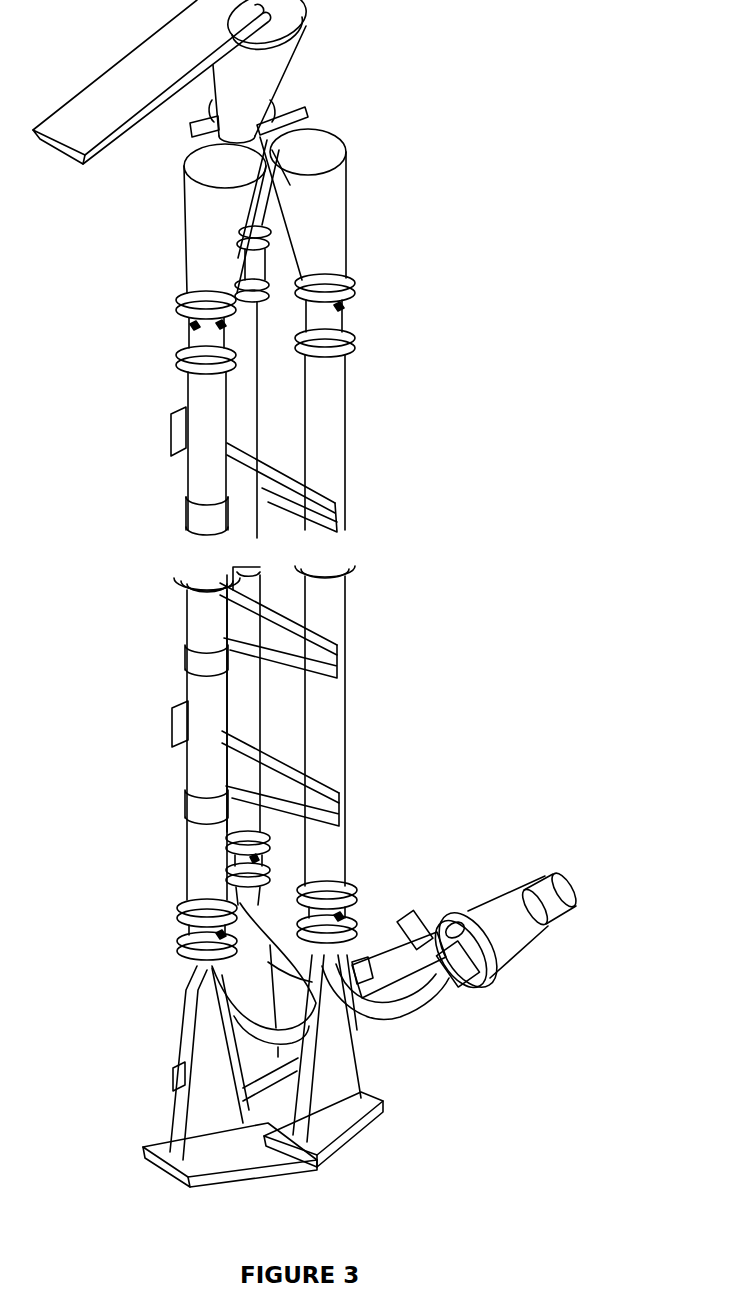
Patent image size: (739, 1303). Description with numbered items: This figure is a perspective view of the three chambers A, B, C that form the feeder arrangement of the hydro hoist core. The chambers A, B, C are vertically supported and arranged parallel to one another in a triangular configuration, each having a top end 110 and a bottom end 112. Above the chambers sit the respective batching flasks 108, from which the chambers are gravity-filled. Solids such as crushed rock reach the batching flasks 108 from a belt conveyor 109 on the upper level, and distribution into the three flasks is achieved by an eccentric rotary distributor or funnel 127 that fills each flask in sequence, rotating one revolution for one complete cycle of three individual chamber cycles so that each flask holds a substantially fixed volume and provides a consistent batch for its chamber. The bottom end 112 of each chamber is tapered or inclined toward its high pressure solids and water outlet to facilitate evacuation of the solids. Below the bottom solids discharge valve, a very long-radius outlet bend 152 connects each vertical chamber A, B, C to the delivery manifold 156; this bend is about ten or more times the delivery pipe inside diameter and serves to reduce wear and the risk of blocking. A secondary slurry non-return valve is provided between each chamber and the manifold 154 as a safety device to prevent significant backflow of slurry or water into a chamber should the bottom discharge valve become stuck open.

The belt conveyor 109 is at (118, 80).
The eccentric rotary distributor or funnel 127 is at (262, 82).
The batching flasks 108 is at (332, 212).
The top end 110 is at (357, 278).
The chamber A is at (208, 455).
The chamber B is at (240, 390).
The chamber C is at (325, 412).
The bottom end 112 is at (357, 884).
The long-radius outlet bend 152 is at (408, 1010).
The manifold 154 is at (463, 958).
The delivery manifold 156 is at (512, 935).